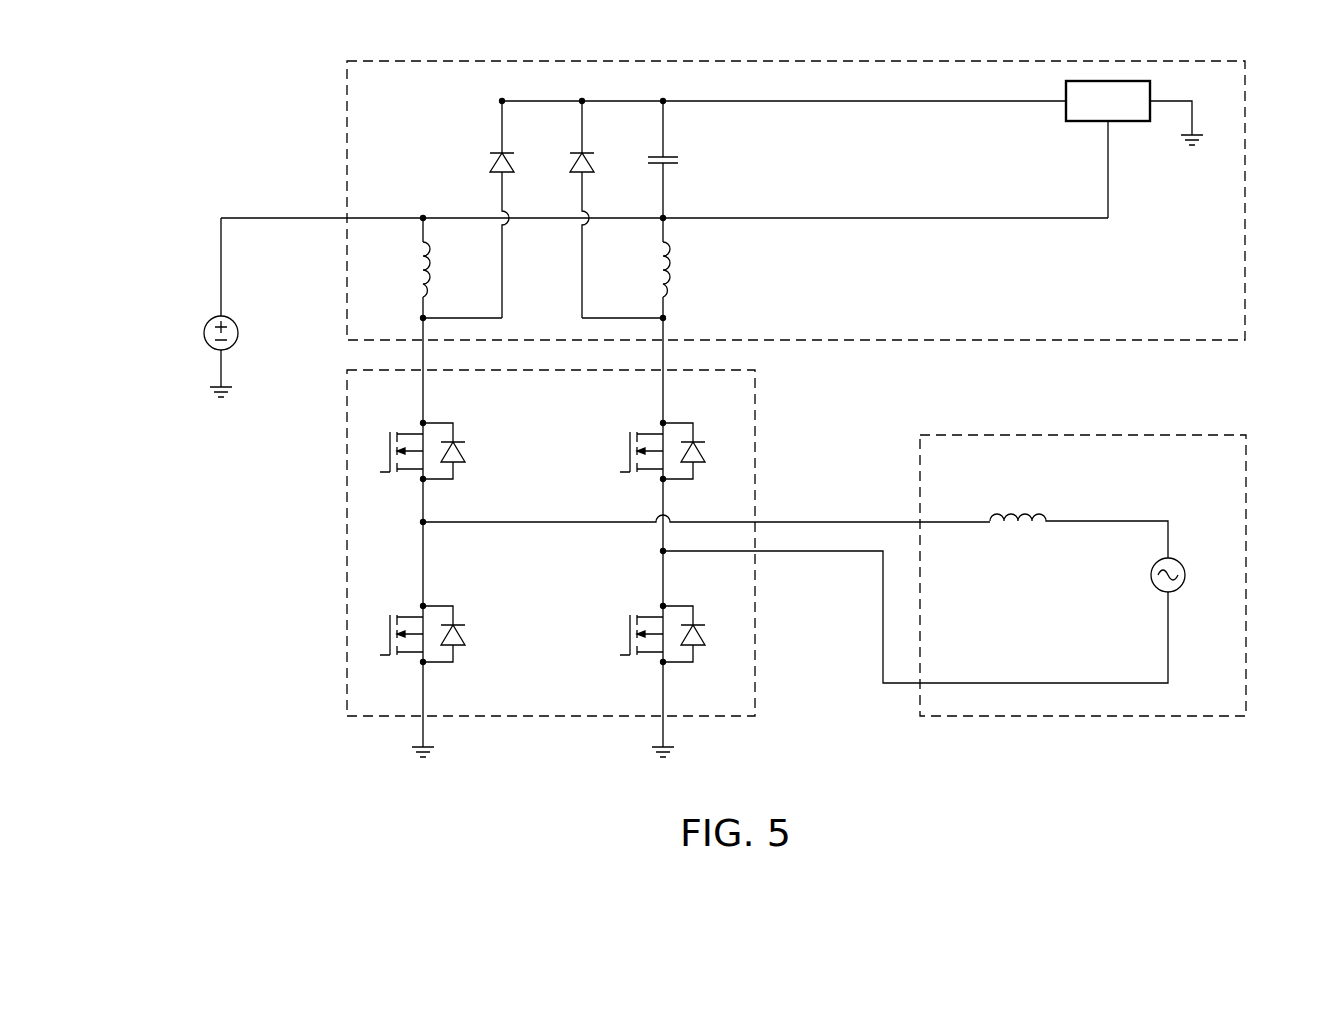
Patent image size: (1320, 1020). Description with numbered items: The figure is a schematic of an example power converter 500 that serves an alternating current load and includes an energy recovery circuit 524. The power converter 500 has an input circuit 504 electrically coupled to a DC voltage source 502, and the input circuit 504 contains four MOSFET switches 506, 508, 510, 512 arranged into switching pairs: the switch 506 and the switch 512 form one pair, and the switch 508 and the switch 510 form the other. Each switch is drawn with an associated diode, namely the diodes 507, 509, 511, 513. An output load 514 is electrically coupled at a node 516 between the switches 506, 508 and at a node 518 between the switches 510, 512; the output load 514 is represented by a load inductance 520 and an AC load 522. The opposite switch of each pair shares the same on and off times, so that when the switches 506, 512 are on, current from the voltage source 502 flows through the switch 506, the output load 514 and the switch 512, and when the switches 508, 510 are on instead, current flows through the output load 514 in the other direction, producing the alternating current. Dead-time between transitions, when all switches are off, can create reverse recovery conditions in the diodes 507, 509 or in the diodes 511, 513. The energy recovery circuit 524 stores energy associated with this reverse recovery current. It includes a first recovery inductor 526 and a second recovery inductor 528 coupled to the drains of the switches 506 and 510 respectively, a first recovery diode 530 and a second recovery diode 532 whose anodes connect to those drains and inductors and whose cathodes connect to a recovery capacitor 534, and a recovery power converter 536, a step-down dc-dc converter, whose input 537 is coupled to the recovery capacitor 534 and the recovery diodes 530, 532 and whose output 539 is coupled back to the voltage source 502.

The power converter 500 is at (230, 126).
The DC voltage source 502 is at (210, 318).
The input circuit 504 is at (347, 660).
The switch 506 is at (380, 445).
The diode 507 is at (478, 448).
The switch 508 is at (380, 628).
The diode 509 is at (478, 630).
The switch 510 is at (622, 456).
The diode 511 is at (718, 447).
The switch 512 is at (622, 640).
The diode 513 is at (718, 630).
The output load 514 is at (1246, 650).
The node 516 is at (423, 522).
The node 518 is at (663, 551).
The load inductance 520 is at (1012, 537).
The AC load 522 is at (1148, 588).
The energy recovery circuit 524 is at (345, 77).
The first recovery inductor 526 is at (396, 272).
The second recovery inductor 528 is at (650, 283).
The first recovery diode 530 is at (514, 145).
The second recovery diode 532 is at (596, 145).
The recovery capacitor 534 is at (678, 145).
The recovery power converter 536 is at (1080, 121).
The input 537 is at (1054, 112).
The output 539 is at (1162, 124).